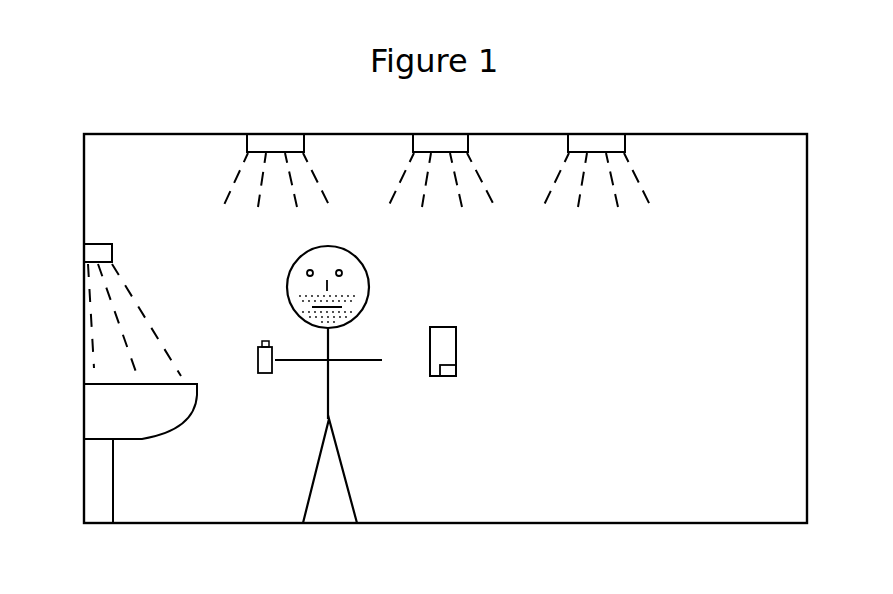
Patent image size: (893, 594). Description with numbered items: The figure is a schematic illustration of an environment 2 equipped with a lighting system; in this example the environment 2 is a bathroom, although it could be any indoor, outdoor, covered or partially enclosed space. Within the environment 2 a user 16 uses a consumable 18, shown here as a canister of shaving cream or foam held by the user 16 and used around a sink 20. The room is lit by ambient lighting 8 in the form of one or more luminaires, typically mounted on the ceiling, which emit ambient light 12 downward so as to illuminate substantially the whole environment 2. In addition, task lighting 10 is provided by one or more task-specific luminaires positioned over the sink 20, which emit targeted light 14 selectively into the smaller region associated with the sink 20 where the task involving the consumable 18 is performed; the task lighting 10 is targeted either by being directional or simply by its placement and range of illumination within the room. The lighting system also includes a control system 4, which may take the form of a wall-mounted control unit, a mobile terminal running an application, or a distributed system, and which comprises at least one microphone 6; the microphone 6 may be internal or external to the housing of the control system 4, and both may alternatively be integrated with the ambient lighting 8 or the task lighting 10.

The environment 2 is at (688, 134).
The control system 4 is at (457, 338).
The microphone 6 is at (457, 371).
The ambient lighting 8 is at (583, 136).
The task lighting 10 is at (105, 246).
The ambient light 12 is at (628, 176).
The targeted light 14 is at (128, 312).
The user 16 is at (340, 460).
The consumable 18 is at (258, 374).
The sink 20 is at (170, 438).